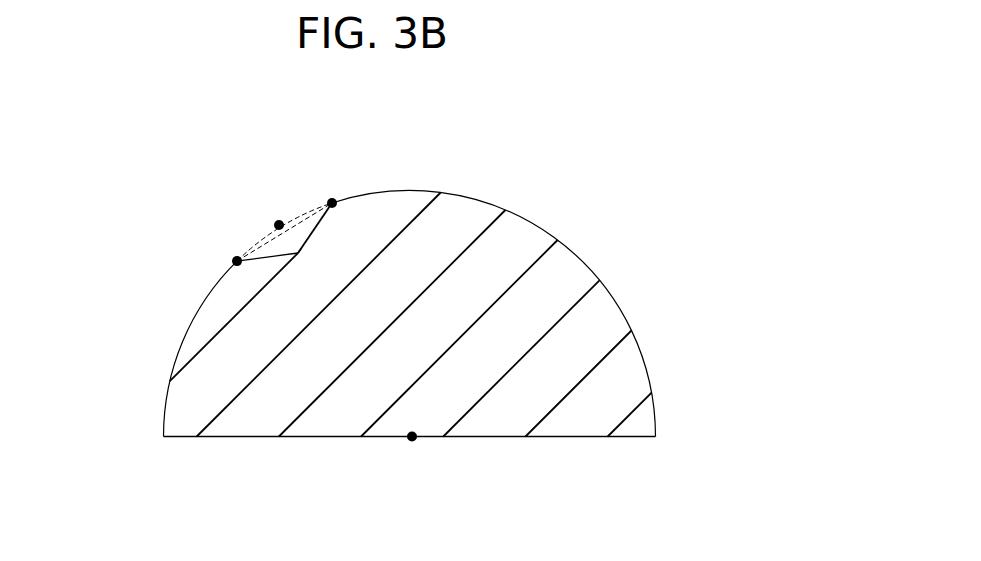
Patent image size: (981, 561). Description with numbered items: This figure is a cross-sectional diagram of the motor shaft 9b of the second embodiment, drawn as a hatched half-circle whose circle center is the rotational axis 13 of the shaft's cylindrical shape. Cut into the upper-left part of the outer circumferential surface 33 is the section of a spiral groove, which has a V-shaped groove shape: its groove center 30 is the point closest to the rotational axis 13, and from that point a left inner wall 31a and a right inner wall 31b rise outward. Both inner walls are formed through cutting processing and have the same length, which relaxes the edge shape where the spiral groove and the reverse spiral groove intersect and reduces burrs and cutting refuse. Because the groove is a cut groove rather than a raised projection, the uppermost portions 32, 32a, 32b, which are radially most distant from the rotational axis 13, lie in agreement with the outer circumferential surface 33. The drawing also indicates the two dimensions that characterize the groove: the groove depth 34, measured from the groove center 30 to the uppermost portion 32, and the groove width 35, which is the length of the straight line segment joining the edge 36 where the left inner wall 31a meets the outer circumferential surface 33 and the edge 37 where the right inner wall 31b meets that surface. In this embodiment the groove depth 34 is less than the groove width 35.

The motor shaft 9b is at (548, 147).
The rotational axis 13 is at (412, 436).
The groove center 30 is at (298, 253).
The left inner wall 31a is at (262, 257).
The right inner wall 31b is at (315, 222).
The uppermost portion 32 is at (298, 253).
The uppermost portion 32a is at (237, 261).
The uppermost portion 32b is at (332, 203).
The outer circumferential surface 33 is at (183, 338).
The groove depth 34 is at (279, 224).
The groove width 35 is at (299, 244).
The edge 36 is at (237, 261).
The edge 37 is at (332, 203).